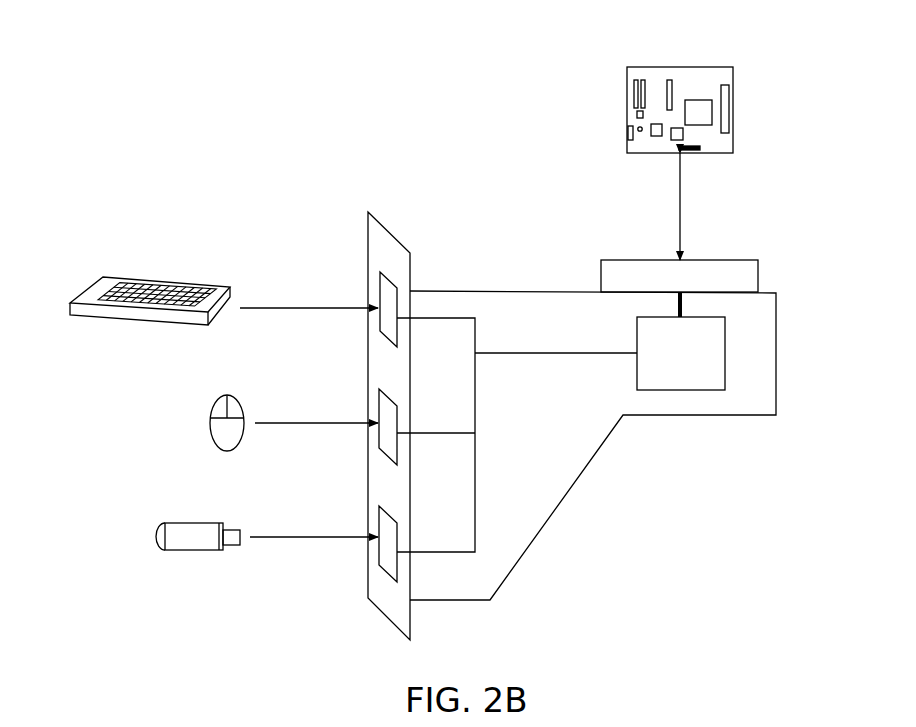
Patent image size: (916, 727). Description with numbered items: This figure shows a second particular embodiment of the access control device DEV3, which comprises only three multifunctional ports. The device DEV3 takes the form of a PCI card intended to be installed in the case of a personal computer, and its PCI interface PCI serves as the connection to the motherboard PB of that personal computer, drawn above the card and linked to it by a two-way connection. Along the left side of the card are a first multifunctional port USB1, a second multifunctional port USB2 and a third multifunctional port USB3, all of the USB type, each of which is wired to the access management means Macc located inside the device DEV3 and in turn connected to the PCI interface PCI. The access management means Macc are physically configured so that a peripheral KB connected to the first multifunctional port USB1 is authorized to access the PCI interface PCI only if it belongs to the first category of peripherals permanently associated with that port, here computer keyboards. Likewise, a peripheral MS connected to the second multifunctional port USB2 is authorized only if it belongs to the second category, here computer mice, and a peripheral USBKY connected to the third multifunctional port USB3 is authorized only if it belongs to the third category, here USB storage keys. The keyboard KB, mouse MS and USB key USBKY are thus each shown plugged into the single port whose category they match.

The access control device DEV3 is at (807, 416).
The first multifunctional port USB1 is at (388, 325).
The second multifunctional port USB2 is at (388, 445).
The third multifunctional port USB3 is at (388, 558).
The PCI interface PCI is at (750, 277).
The access management means Macc is at (681, 353).
The motherboard PB is at (737, 97).
The peripheral (computer keyboard) KB is at (170, 280).
The peripheral (computer mouse) MS is at (218, 436).
The peripheral (USB storage key) USBKY is at (197, 552).